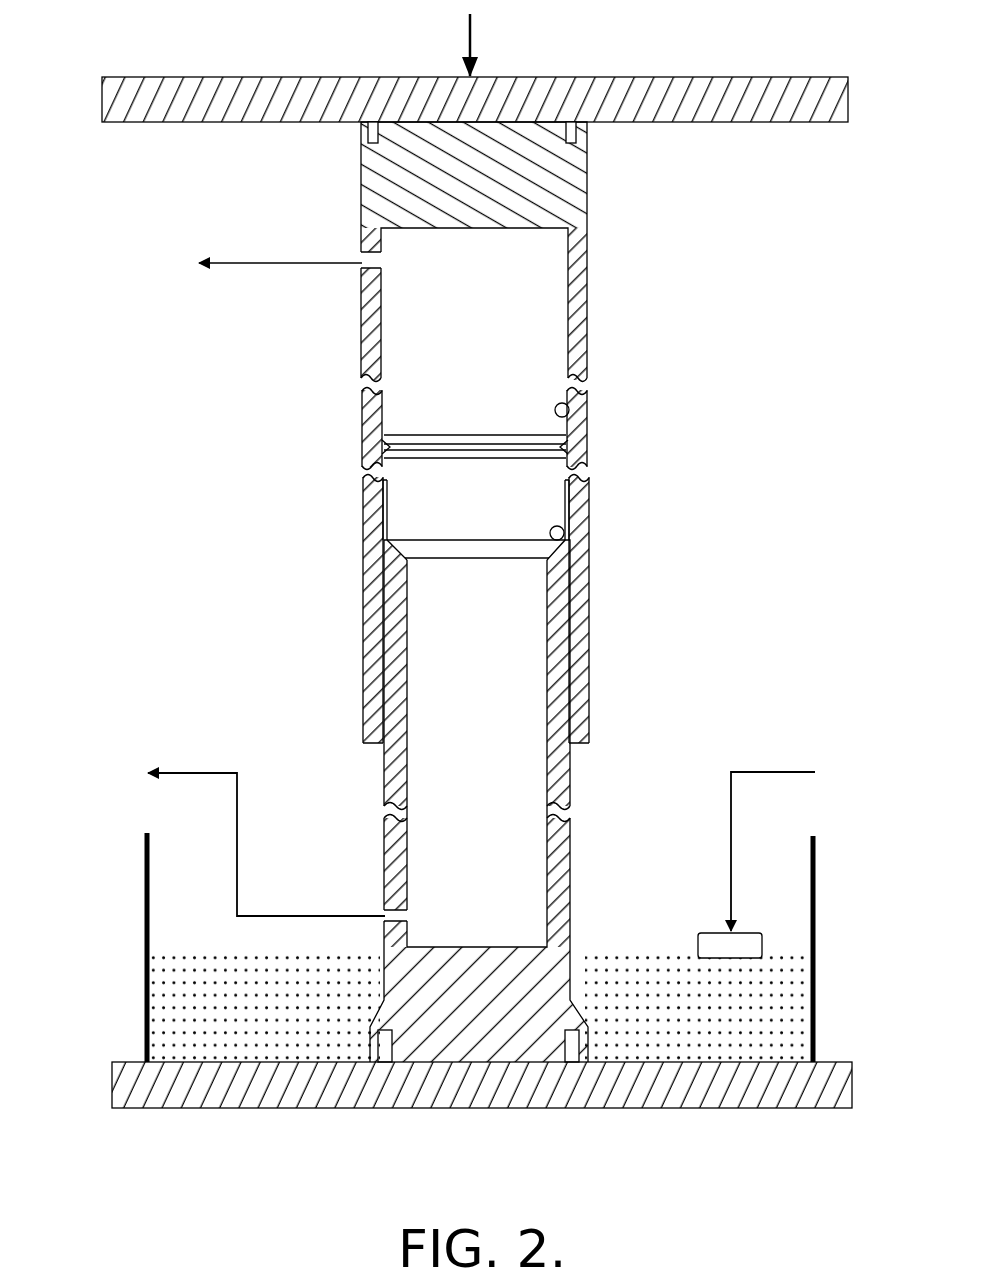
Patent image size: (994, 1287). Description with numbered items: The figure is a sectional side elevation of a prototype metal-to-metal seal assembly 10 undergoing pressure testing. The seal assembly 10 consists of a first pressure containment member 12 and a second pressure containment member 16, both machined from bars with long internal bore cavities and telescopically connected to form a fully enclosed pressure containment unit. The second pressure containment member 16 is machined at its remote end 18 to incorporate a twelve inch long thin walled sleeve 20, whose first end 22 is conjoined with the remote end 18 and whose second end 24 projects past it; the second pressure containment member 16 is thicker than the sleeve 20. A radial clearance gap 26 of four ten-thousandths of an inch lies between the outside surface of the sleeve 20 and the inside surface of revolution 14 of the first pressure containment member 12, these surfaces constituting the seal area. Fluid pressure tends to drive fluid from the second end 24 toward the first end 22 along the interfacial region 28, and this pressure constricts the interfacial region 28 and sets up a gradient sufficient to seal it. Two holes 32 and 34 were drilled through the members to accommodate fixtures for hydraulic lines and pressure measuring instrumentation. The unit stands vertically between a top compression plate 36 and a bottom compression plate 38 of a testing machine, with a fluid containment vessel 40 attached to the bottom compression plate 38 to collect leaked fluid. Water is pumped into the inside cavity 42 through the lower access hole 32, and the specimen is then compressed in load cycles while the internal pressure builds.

The seal assembly 10 is at (281, 460).
The first pressure containment member 12 is at (588, 293).
The surface of revolution 14 is at (588, 425).
The second pressure containment member 16 is at (393, 650).
The remote end 18 is at (575, 531).
The thin walled extension sleeve 20 is at (587, 500).
The first end of sleeve 22 is at (381, 545).
The second end of sleeve 24 is at (383, 446).
The radial clearance gap 26 is at (366, 487).
The interfacial region 28 is at (366, 510).
The access hole 32 is at (386, 915).
The access hole 34 is at (363, 266).
The top compression plate 36 is at (265, 88).
The bottom compression plate 38 is at (290, 1100).
The fluid containment vessel 40 is at (146, 936).
The inside cavity 42 is at (456, 691).